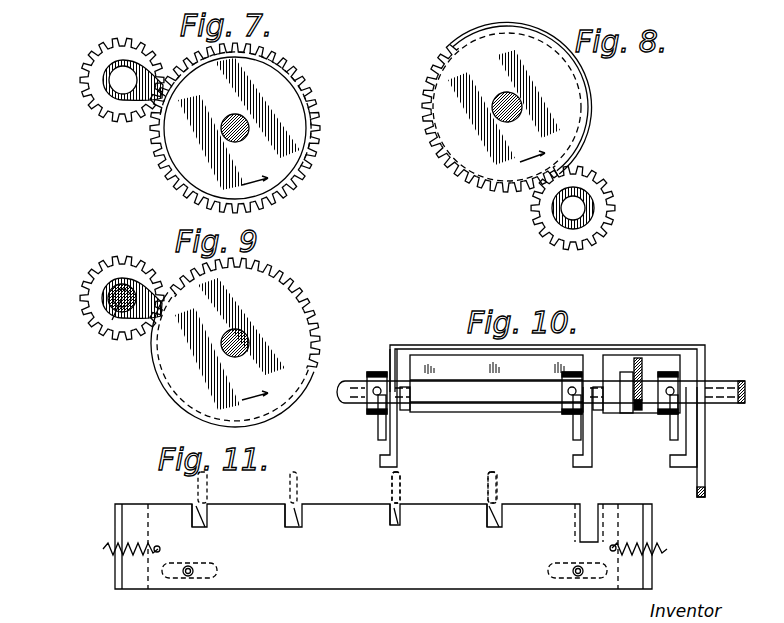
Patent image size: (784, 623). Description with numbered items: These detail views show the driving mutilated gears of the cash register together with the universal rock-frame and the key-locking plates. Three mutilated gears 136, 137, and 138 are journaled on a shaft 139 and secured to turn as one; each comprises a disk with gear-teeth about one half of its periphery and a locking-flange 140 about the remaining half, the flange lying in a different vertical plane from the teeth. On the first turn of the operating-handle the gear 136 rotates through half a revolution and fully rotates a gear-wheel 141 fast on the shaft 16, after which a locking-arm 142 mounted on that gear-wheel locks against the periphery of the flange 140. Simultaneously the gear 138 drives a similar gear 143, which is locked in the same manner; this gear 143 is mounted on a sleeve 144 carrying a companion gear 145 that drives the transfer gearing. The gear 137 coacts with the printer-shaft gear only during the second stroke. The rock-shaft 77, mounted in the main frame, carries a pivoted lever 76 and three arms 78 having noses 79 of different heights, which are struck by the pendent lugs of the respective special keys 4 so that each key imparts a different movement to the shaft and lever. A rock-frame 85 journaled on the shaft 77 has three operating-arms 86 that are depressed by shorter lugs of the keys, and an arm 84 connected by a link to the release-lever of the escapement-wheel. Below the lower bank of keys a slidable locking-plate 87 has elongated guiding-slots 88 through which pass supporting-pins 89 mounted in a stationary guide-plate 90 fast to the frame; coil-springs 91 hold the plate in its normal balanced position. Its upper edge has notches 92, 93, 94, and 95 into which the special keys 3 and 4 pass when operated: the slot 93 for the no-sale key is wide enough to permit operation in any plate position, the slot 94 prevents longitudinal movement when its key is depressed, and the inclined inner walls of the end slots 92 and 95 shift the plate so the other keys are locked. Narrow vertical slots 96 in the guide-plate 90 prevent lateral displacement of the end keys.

In FIG. 11, the key 3 is at (297, 486).
In FIG. 10, the special keys 4 is at (400, 484).
In FIG. 11, the special keys 4 is at (207, 485).
In FIG. 8, the shaft 16 is at (586, 203).
In FIG. 10, the pivoted lever 76 is at (639, 358).
In FIG. 10, the rock-shaft 77 is at (458, 403).
In FIG. 10, the arms 78 is at (380, 416).
In FIG. 10, the noses 79 is at (381, 435).
In FIG. 10, the arm 84 is at (700, 429).
In FIG. 10, the rock-frame 85 is at (670, 340).
In FIG. 10, the operating-arms 86 is at (397, 438).
In FIG. 11, the locking-plate 87 is at (166, 524).
In FIG. 11, the guiding-slots 88 is at (218, 571).
In FIG. 11, the supporting-pins 89 is at (188, 577).
In FIG. 11, the guide-plate 90 is at (383, 546).
In FIG. 11, the coil-springs 91 is at (113, 545).
In FIG. 11, the slot 92 is at (206, 527).
In FIG. 11, the slot 93 is at (300, 526).
In FIG. 11, the slot 94 is at (399, 525).
In FIG. 11, the slot 95 is at (489, 510).
In FIG. 11, the vertical slots 96 is at (207, 519).
In FIG. 7, the mutilated gear 136 is at (83, 75).
In FIG. 8, the mutilated gear 136 is at (504, 98).
In FIG. 7, the mutilated gear 137 is at (253, 100).
In FIG. 7, the mutilated gear 138 is at (122, 65).
In FIG. 9, the mutilated gear 138 is at (103, 284).
In FIG. 7, the shaft 139 is at (233, 108).
In FIG. 8, the shaft 139 is at (505, 97).
In FIG. 9, the shaft 139 is at (228, 331).
In FIG. 7, the locking-flange 140 is at (283, 72).
In FIG. 8, the locking-flange 140 is at (592, 117).
In FIG. 9, the locking-flange 140 is at (242, 325).
In FIG. 8, the gear-wheel 141 is at (606, 226).
In FIG. 8, the locking-arm 142 is at (558, 185).
In FIG. 9, the gear 143 is at (86, 303).
In FIG. 9, the sleeve 144 is at (122, 320).
In FIG. 9, the companion gear 145 is at (108, 256).